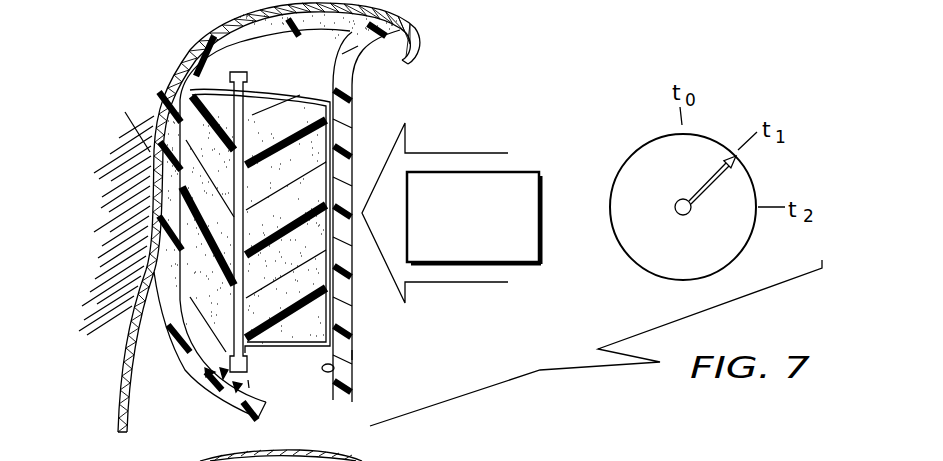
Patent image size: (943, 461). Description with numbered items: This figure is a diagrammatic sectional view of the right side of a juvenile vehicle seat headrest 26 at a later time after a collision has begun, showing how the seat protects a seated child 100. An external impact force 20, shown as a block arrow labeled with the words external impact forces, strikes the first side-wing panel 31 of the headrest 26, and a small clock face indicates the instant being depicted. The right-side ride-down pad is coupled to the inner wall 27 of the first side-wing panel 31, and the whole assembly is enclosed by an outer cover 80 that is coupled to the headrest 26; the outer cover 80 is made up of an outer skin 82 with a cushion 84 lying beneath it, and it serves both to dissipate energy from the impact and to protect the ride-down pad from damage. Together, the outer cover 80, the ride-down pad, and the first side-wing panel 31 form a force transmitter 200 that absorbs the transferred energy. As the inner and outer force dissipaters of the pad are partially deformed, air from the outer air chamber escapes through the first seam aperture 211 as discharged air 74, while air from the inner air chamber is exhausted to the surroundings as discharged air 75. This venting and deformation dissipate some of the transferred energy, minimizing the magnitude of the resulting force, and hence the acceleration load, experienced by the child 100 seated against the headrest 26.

The outer cover 80 is at (199, 39).
The outer skin 82 is at (412, 61).
The cushion 84 is at (307, 30).
The headrest 26 is at (355, 109).
The child 100 is at (128, 178).
The force transmitter 200 is at (160, 215).
The discharged air 74 is at (229, 363).
The first seam aperture 211 is at (200, 386).
The discharged air 75 is at (254, 384).
The inner wall 27 is at (334, 368).
The first side-wing panel 31 is at (364, 356).
The external impact force 20 is at (513, 172).